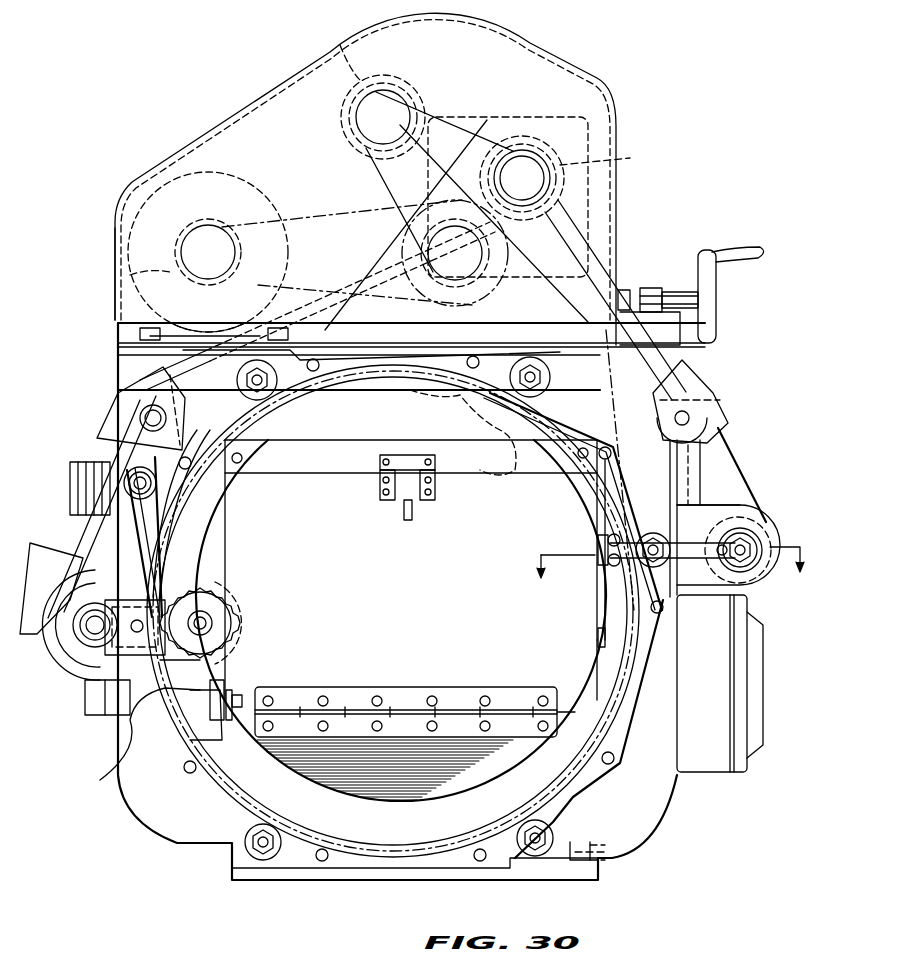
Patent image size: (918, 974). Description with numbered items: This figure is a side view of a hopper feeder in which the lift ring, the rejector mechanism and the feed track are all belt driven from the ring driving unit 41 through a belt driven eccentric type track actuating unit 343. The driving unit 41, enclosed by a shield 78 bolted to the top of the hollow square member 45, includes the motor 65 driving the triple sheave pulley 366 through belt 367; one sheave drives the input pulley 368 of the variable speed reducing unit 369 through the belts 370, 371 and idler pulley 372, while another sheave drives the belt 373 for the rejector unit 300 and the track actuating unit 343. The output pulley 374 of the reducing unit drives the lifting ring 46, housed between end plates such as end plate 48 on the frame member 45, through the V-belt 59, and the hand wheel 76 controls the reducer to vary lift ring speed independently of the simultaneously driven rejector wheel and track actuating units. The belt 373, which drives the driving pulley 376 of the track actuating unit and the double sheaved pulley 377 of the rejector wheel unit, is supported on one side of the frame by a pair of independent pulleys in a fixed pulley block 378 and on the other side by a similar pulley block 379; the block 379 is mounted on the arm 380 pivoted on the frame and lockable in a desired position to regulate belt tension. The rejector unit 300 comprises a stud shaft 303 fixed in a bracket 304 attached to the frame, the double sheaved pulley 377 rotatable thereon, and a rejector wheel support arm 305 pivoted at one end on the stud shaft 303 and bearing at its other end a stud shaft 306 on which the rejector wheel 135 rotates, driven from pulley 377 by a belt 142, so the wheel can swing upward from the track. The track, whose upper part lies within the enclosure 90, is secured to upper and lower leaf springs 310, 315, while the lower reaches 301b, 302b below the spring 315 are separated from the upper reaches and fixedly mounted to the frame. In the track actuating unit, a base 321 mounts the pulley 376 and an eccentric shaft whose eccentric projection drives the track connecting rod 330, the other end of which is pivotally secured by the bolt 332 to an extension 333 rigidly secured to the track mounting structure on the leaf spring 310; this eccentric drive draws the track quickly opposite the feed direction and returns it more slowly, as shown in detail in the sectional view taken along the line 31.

The driving unit 41 is at (283, 128).
The idler pulley 372 is at (340, 45).
The belt 371 is at (432, 112).
The belt 367 is at (303, 215).
The belt 370 is at (384, 185).
The output pulley 374 is at (626, 158).
The input pulley 368 is at (548, 188).
The variable speed reducing unit 369 is at (590, 262).
The triple sheave pulley 366 is at (480, 295).
The shield 78 is at (114, 222).
The motor 65 is at (130, 275).
The hand wheel 76 is at (718, 320).
The belt 373 is at (190, 370).
The hollow square member 45 is at (130, 372).
The pulley block 379 is at (115, 405).
The pulley block 378 is at (722, 395).
The V-belt 59 is at (606, 410).
The rejector unit 300 is at (45, 535).
The arm 380 is at (175, 482).
The enclosure 90 is at (240, 518).
The end plate 48 is at (215, 546).
The lifting ring 46 is at (512, 480).
The bolt 332 is at (665, 535).
The track connecting rod 330 is at (700, 486).
The track actuating unit 343 is at (775, 498).
The driving pulley 376 is at (768, 518).
The extension 333 is at (620, 530).
The section line 31 is at (665, 572).
The upper leaf spring 310 is at (603, 600).
The base 321 is at (755, 590).
The rejector wheel 135 is at (222, 592).
The stud shaft 306 is at (208, 620).
The rejector wheel support arm 305 is at (232, 645).
The stud shaft 303 is at (90, 632).
The double sheaved pulley 377 is at (90, 710).
The bracket 304 is at (110, 712).
The belt 142 is at (175, 665).
The lower leaf spring 315 is at (235, 725).
The lower reach 301b is at (98, 758).
The lower reach 302b is at (108, 782).